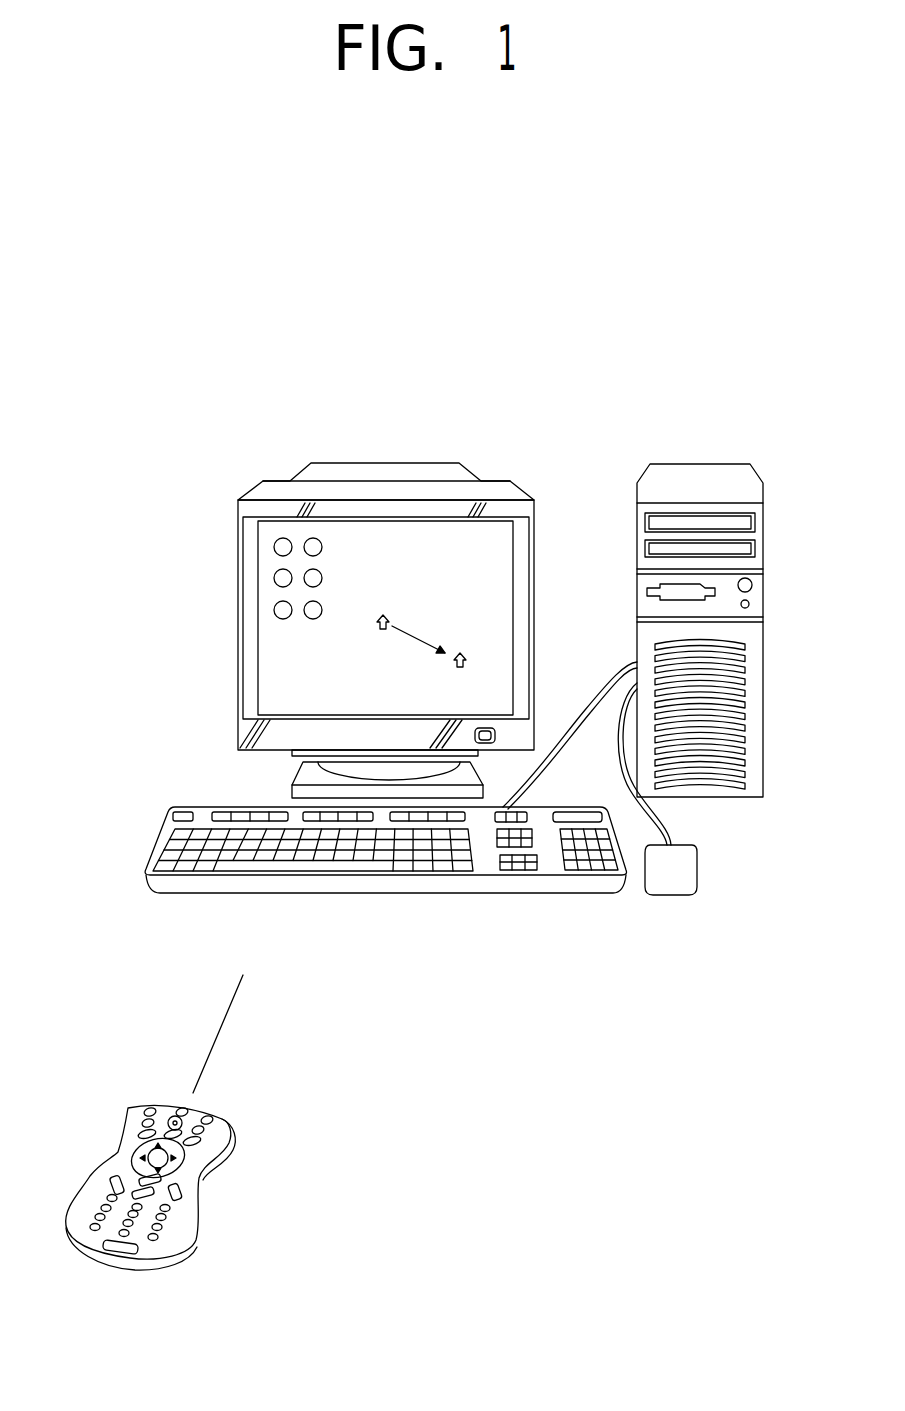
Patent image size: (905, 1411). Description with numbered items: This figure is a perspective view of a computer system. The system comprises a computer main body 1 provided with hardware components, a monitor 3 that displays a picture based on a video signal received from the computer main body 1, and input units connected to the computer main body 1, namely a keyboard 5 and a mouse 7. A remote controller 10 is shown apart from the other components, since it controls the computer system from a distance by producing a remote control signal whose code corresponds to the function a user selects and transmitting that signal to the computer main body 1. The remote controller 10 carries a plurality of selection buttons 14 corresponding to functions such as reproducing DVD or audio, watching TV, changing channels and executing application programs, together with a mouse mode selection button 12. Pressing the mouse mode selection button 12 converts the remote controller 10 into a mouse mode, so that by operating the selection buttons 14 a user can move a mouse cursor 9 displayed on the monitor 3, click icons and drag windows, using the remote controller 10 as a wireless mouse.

The computer main body 1 is at (698, 464).
The monitor 3 is at (386, 585).
The keyboard 5 is at (472, 895).
The mouse 7 is at (672, 895).
The mouse cursor 9 is at (385, 630).
The remote controller 10 is at (145, 1165).
The mouse mode selection button 12 is at (112, 1252).
The selection buttons 14 is at (58, 1213).